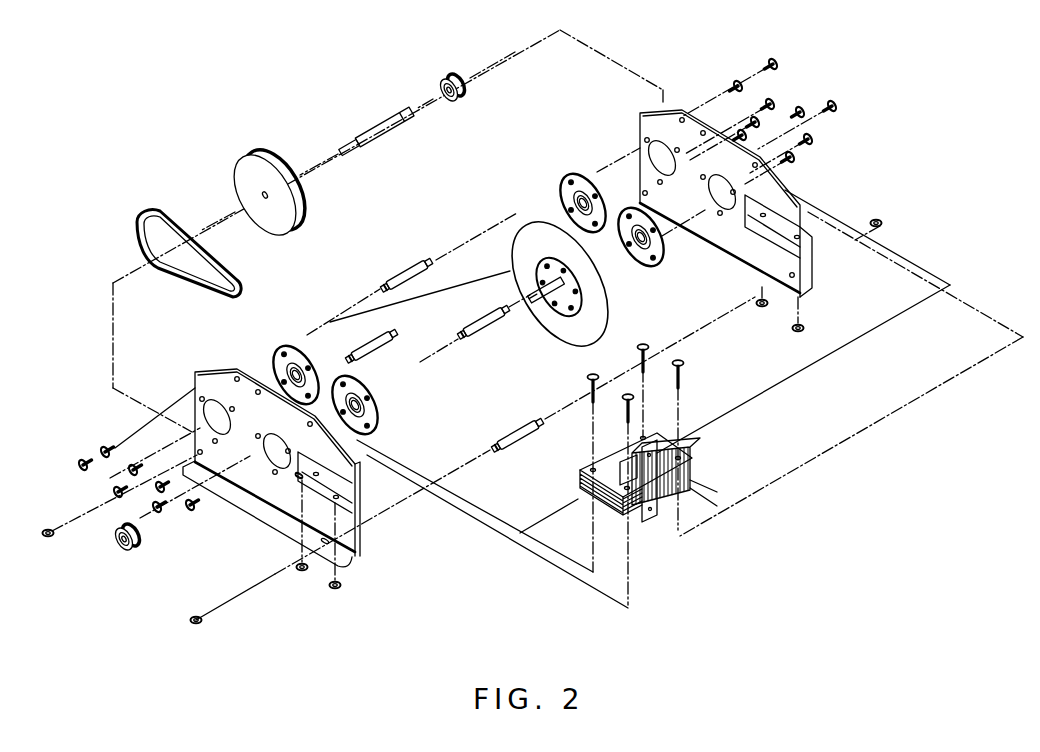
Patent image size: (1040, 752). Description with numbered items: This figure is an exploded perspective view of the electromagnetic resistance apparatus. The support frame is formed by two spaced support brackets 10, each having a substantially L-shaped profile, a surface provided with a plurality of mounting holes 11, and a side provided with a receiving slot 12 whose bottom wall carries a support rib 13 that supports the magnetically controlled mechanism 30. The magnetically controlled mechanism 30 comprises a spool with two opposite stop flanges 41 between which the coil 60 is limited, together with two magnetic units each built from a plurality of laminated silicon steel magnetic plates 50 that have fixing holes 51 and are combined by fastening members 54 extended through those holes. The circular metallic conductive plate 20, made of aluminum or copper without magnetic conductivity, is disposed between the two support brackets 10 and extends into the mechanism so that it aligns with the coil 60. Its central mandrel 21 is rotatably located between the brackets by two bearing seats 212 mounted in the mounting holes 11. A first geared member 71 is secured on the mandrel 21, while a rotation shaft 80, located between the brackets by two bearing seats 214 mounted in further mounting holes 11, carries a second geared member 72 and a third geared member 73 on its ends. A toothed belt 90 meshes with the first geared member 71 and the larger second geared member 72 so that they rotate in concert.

The support bracket 10 is at (770, 192).
The mounting hole 11 is at (665, 157).
The receiving slot 12 is at (347, 559).
The support rib 13 is at (330, 488).
The metallic conductive plate 20 is at (560, 327).
The mandrel 21 is at (530, 294).
The bearing seat 212 is at (647, 258).
The bearing seat 214 is at (575, 178).
The magnetically controlled mechanism 30 is at (760, 524).
The stop flange 41 is at (654, 519).
The magnetic plate 50 is at (635, 516).
The fixing hole 51 is at (580, 471).
The fastening member 54 is at (586, 379).
The coil 60 is at (693, 467).
The first geared member 71 is at (118, 543).
The second geared member 72 is at (250, 168).
The third geared member 73 is at (441, 78).
The rotation shaft 80 is at (370, 130).
The toothed belt 90 is at (168, 253).